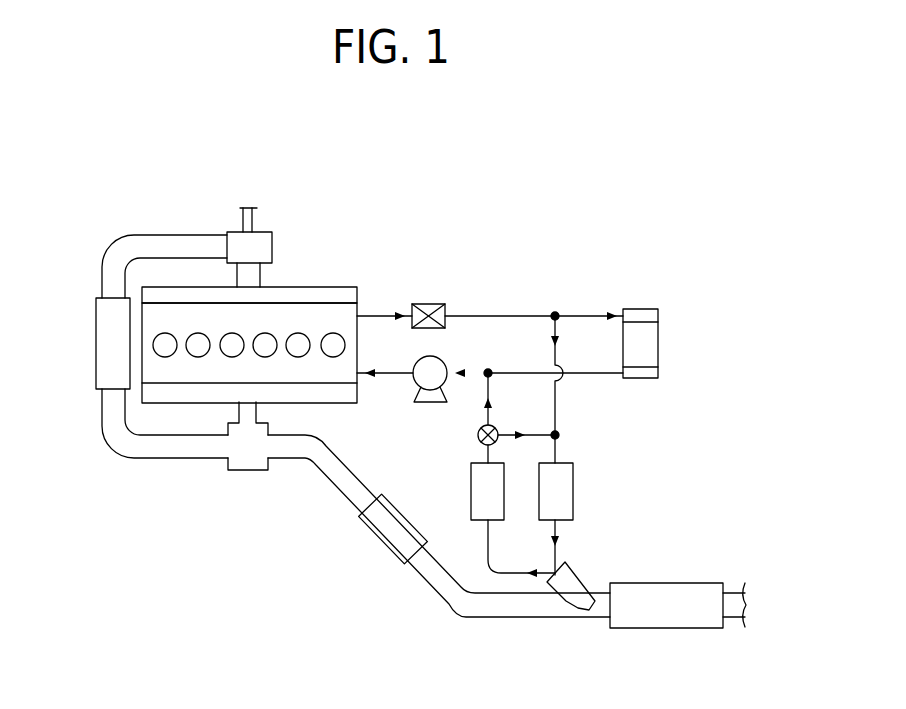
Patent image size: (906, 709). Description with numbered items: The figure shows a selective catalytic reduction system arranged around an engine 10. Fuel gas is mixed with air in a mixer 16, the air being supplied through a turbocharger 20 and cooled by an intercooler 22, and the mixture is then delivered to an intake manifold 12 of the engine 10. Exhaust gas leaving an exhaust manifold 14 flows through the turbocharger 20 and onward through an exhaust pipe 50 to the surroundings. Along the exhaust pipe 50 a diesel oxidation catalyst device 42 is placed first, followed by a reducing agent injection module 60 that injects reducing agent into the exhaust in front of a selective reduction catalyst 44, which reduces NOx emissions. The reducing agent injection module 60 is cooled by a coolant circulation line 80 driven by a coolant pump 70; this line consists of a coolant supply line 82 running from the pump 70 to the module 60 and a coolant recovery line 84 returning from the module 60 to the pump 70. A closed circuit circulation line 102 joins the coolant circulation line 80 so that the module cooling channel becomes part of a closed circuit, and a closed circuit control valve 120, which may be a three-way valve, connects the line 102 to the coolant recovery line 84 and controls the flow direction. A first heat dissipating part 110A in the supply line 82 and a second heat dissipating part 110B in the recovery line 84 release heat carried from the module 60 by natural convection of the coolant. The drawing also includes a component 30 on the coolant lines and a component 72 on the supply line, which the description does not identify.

The engine 10 is at (281, 331).
The intake manifold 12 is at (313, 298).
The exhaust manifold 14 is at (315, 397).
The mixer 16 is at (260, 238).
The turbocharger 20 is at (248, 487).
The intercooler 22 is at (100, 342).
The radiator 30 is at (660, 345).
The diesel oxidation catalyst device 42 is at (388, 534).
The selective reduction catalyst 44 is at (667, 628).
The exhaust pipe 50 is at (537, 612).
The reducing agent injection module 60 is at (572, 582).
The coolant pump 70 is at (433, 362).
The thermostat valve 72 is at (445, 303).
The coolant circulation line 80 is at (593, 385).
The coolant supply line 82 is at (558, 390).
The coolant recovery line 84 is at (490, 415).
The closed circuit circulation line 102 is at (540, 437).
The first heat dissipating part 110A is at (563, 502).
The second heat dissipating part 110B is at (480, 488).
The closed circuit control valve 120 is at (478, 434).